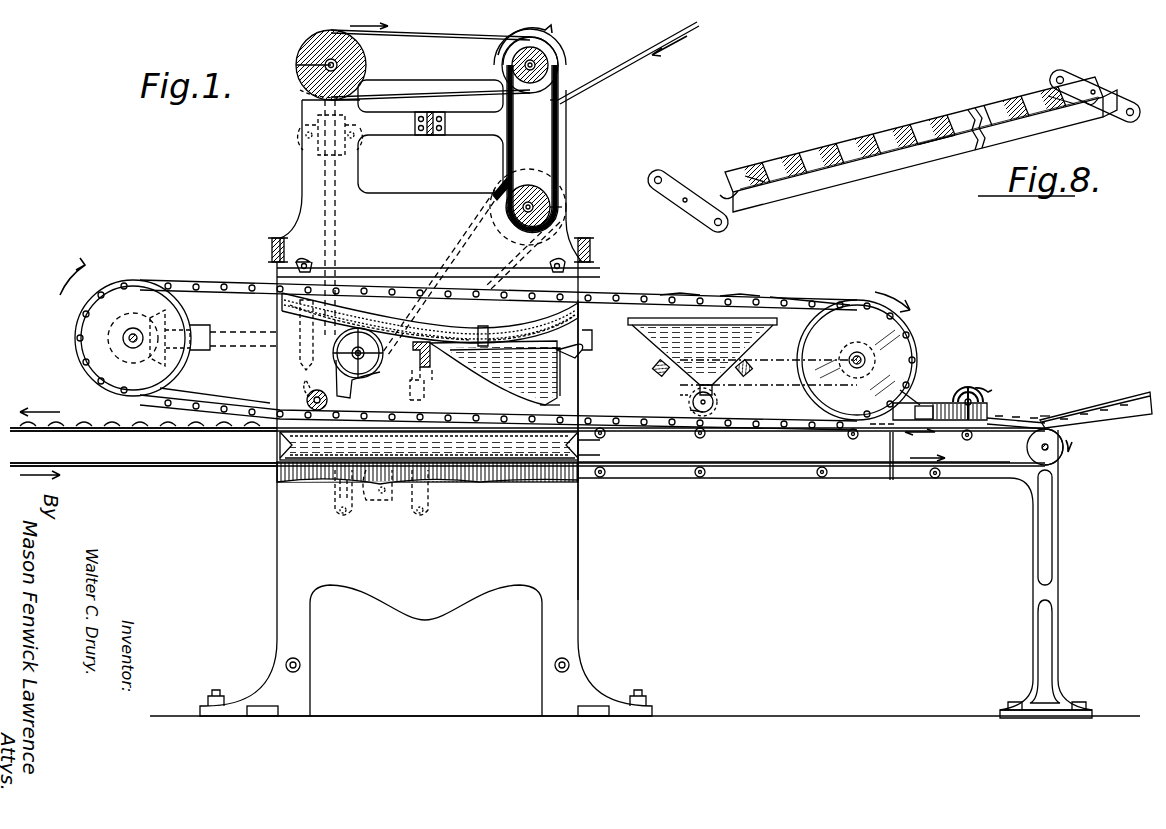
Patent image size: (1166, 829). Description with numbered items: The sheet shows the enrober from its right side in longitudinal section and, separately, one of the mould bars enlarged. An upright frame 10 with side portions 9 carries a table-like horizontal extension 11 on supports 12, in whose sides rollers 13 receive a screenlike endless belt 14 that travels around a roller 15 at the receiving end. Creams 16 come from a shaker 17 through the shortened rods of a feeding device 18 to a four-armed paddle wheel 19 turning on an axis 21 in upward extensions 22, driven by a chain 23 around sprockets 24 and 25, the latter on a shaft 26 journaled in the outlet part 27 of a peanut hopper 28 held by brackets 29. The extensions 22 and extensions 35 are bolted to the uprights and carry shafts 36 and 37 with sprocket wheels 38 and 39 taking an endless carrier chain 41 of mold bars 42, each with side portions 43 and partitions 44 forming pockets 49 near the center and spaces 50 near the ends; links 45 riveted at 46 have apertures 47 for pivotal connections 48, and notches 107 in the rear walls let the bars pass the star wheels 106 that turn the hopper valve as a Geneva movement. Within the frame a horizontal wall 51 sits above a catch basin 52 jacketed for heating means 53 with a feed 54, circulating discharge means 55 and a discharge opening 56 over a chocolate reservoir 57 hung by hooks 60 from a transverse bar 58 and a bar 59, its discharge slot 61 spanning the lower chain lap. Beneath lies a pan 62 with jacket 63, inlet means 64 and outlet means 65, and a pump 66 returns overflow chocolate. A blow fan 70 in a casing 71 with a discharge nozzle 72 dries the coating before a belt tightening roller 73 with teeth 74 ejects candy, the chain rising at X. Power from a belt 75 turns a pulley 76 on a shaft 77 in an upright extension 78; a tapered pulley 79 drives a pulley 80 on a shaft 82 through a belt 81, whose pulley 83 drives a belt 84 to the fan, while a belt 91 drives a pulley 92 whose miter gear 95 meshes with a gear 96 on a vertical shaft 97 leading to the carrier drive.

In FIG. 1, the side portions 9 is at (426, 398).
In FIG. 1, the frame 10 is at (582, 568).
In FIG. 1, the horizontal extension 11 is at (745, 480).
In FIG. 1, the supports 12 is at (1033, 548).
In FIG. 1, the rollers 13 is at (695, 478).
In FIG. 1, the endless belt 14 is at (893, 480).
In FIG. 1, the roller 15 is at (1050, 462).
In FIG. 1, the creams 16 is at (1020, 416).
In FIG. 1, the shaker 17 is at (1140, 398).
In FIG. 1, the feeding device 18 is at (1050, 418).
In FIG. 1, the paddle wheel 19 is at (962, 397).
In FIG. 1, the axis 21 is at (985, 424).
In FIG. 1, the upward extensions 22 is at (772, 370).
In FIG. 1, the chain 23 is at (920, 400).
In FIG. 1, the sprocket 24 is at (980, 388).
In FIG. 1, the sprocket wheel 25 is at (688, 398).
In FIG. 1, the shaft 26 is at (717, 402).
In FIG. 1, the outlet part 27 is at (712, 385).
In FIG. 1, the hopper 28 is at (702, 351).
In FIG. 1, the brackets 29 is at (655, 364).
In FIG. 1, the extensions 35 is at (498, 355).
In FIG. 1, the shaft 36 is at (858, 352).
In FIG. 1, the shaft 37 is at (128, 330).
In FIG. 1, the sprocket wheel 38 is at (857, 356).
In FIG. 1, the sprocket wheel 39 is at (133, 290).
In FIG. 1, the endless carrier chain 41 is at (770, 298).
In FIG. 1, the mold bars 42 is at (755, 296).
In FIG. 8, the mold bars 42 is at (850, 133).
In FIG. 8, the side portions 43 is at (808, 160).
In FIG. 8, the partitions 44 is at (905, 125).
In FIG. 1, the links 45 is at (672, 296).
In FIG. 8, the links 45 is at (672, 172).
In FIG. 8, the rivets 46 is at (683, 203).
In FIG. 8, the apertures 47 is at (655, 176).
In FIG. 1, the pivotal connections 48 is at (846, 300).
In FIG. 8, the pockets 49 is at (973, 115).
In FIG. 8, the spaces 50 is at (742, 165).
In FIG. 1, the horizontal wall 51 is at (372, 268).
In FIG. 1, the catch basin 52 is at (582, 283).
In FIG. 1, the heating means 53 is at (380, 317).
In FIG. 1, the feed 54 is at (282, 300).
In FIG. 1, the circulating discharge means 55 is at (490, 342).
In FIG. 1, the discharge opening 56 is at (531, 314).
In FIG. 1, the reservoir 57 is at (560, 380).
In FIG. 1, the transverse bar 58 is at (414, 360).
In FIG. 1, the bar 59 is at (565, 360).
In FIG. 1, the hooks 60 is at (585, 345).
In FIG. 1, the discharge slot 61 is at (560, 402).
In FIG. 1, the pan 62 is at (500, 460).
In FIG. 1, the jacket 63 is at (460, 462).
In FIG. 1, the inlet means 64 is at (584, 448).
In FIG. 1, the outlet means 65 is at (277, 468).
In FIG. 1, the pump 66 is at (372, 505).
In FIG. 1, the blow fan 70 is at (345, 345).
In FIG. 1, the casing 71 is at (306, 354).
In FIG. 1, the discharge nozzle 72 is at (346, 395).
In FIG. 1, the belt tightening roller 73 is at (330, 478).
In FIG. 1, the teeth 74 is at (312, 392).
In FIG. 1, the belt 75 is at (630, 62).
In FIG. 1, the pulley 76 is at (500, 36).
In FIG. 1, the shaft 77 is at (548, 60).
In FIG. 1, the upright extension 78 is at (558, 160).
In FIG. 1, the tapered pulley 79 is at (512, 65).
In FIG. 1, the pulley 80 is at (512, 220).
In FIG. 1, the belt 81 is at (554, 135).
In FIG. 1, the shaft 82 is at (538, 203).
In FIG. 1, the pulley 83 is at (560, 212).
In FIG. 1, the belt 84 is at (493, 186).
In FIG. 1, the belt 91 is at (430, 61).
In FIG. 1, the pulley 92 is at (300, 52).
In FIG. 1, the miter gear 95 is at (296, 64).
In FIG. 1, the gear 96 is at (310, 93).
In FIG. 1, the shaft 97 is at (325, 200).
In FIG. 1, the star wheels 106 is at (692, 410).
In FIG. 8, the notches 107 is at (735, 199).
In FIG. 1, the riser X is at (183, 428).